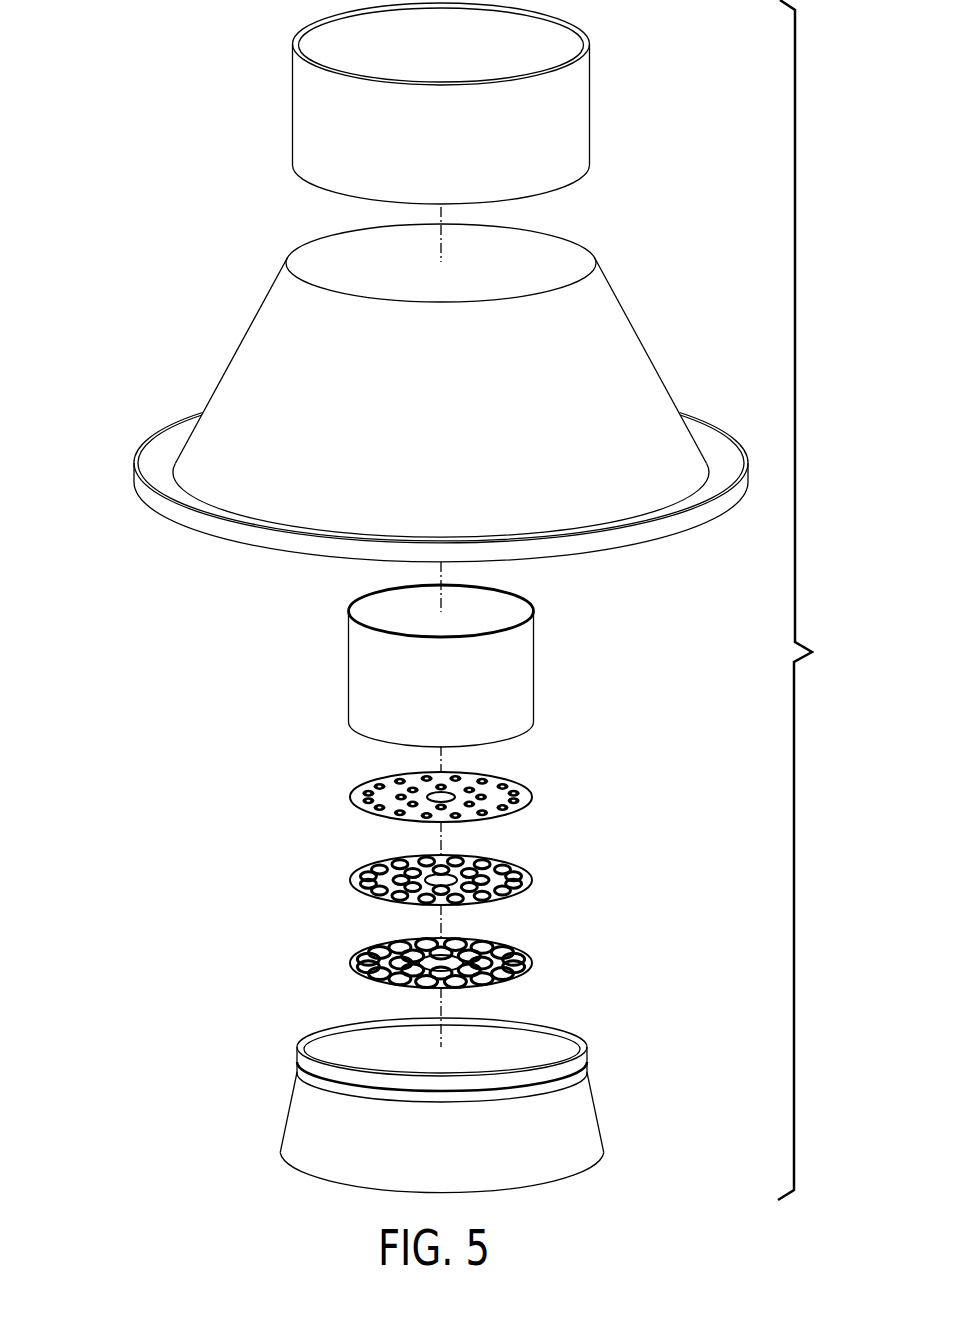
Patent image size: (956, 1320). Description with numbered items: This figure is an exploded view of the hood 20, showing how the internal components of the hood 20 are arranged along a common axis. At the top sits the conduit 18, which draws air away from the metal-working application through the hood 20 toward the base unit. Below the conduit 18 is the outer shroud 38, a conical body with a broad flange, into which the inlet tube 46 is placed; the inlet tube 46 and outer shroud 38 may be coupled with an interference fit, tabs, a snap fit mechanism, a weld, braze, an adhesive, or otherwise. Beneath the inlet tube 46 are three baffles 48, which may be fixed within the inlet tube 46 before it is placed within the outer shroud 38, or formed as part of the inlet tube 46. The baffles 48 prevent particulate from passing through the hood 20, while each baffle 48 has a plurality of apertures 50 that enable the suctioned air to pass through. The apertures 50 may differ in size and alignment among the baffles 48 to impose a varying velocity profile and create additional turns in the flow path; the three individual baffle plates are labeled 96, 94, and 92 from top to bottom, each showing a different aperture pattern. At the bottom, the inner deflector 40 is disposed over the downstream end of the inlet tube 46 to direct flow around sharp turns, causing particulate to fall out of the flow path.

The conduit 18 is at (590, 105).
The hood 20 is at (151, 156).
The outer shroud 38 is at (652, 360).
The inner deflector 40 is at (595, 1108).
The inlet tube 46 is at (534, 665).
The baffles 48 is at (427, 865).
The apertures 50 is at (386, 782).
The first screen 92 is at (350, 963).
The second screen 94 is at (350, 880).
The third screen 96 is at (350, 797).